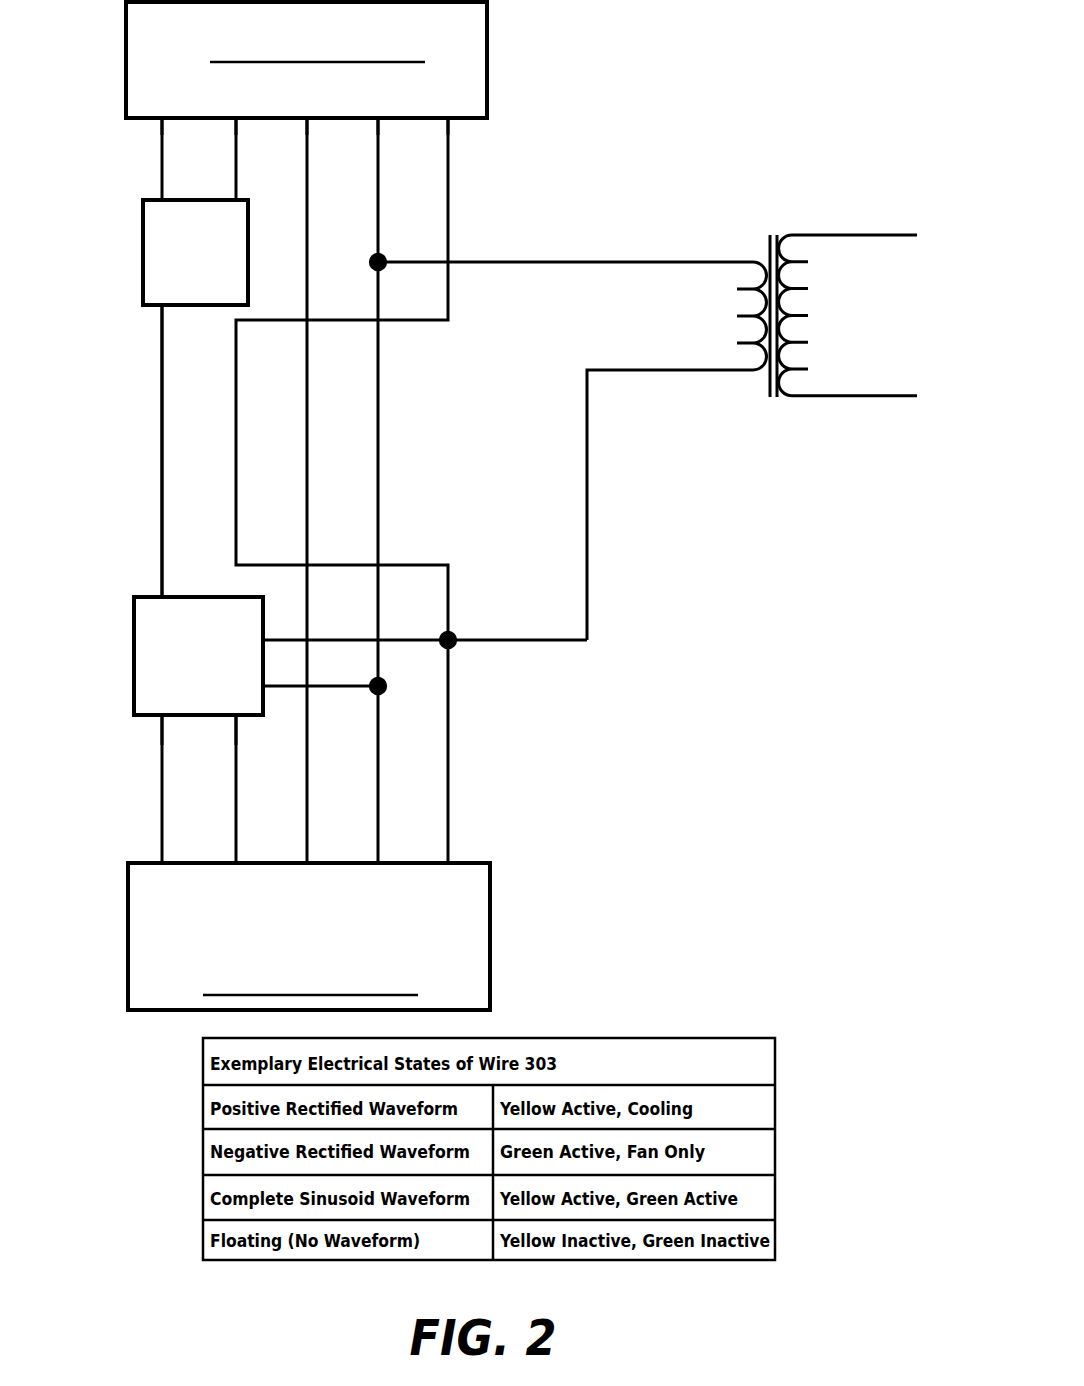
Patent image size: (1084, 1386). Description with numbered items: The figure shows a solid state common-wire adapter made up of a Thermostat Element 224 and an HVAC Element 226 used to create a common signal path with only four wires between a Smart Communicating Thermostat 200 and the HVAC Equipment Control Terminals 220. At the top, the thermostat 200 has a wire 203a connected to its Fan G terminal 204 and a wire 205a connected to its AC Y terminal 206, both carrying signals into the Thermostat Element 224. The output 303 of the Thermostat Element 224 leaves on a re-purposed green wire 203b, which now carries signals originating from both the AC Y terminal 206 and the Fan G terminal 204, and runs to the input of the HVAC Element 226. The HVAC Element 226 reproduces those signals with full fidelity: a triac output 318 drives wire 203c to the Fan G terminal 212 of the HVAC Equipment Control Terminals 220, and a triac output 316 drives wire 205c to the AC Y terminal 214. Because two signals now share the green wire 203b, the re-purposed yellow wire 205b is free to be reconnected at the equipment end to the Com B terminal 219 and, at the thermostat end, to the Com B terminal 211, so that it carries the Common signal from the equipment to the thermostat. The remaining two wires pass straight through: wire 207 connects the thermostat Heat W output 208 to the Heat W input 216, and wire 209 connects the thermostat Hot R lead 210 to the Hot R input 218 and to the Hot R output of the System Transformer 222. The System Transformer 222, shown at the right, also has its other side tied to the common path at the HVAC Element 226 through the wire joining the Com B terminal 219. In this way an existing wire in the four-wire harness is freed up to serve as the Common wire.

The smart communicating thermostat 200 is at (489, 12).
The Fan G terminal 204 is at (159, 124).
The AC Y terminal 206 is at (239, 124).
The Heat W output 208 is at (312, 124).
The Hot R lead 210 is at (383, 124).
The Com B terminal 211 is at (453, 124).
The wire 203a is at (166, 132).
The re-purposed green wire 203b is at (159, 450).
The wire 203c is at (159, 801).
The wire 205a is at (240, 150).
The re-purposed yellow wire 205b is at (240, 449).
The wire 205c is at (239, 750).
The wire 207 is at (304, 367).
The wire 209 is at (375, 367).
The Thermostat Element 224 is at (141, 284).
The output from the Thermostat Element 303 is at (166, 309).
The System Transformer 222 is at (814, 379).
The HVAC Element 226 is at (132, 687).
The output from a triac 318 is at (159, 718).
The output from a triac 316 is at (239, 718).
The HVAC Equipment Control Terminals 220 is at (494, 880).
The Fan G terminal 212 is at (170, 859).
The AC Y terminal 214 is at (240, 859).
The Heat W input 216 is at (312, 859).
The Hot R input 218 is at (383, 859).
The Com B terminal 219 is at (455, 859).